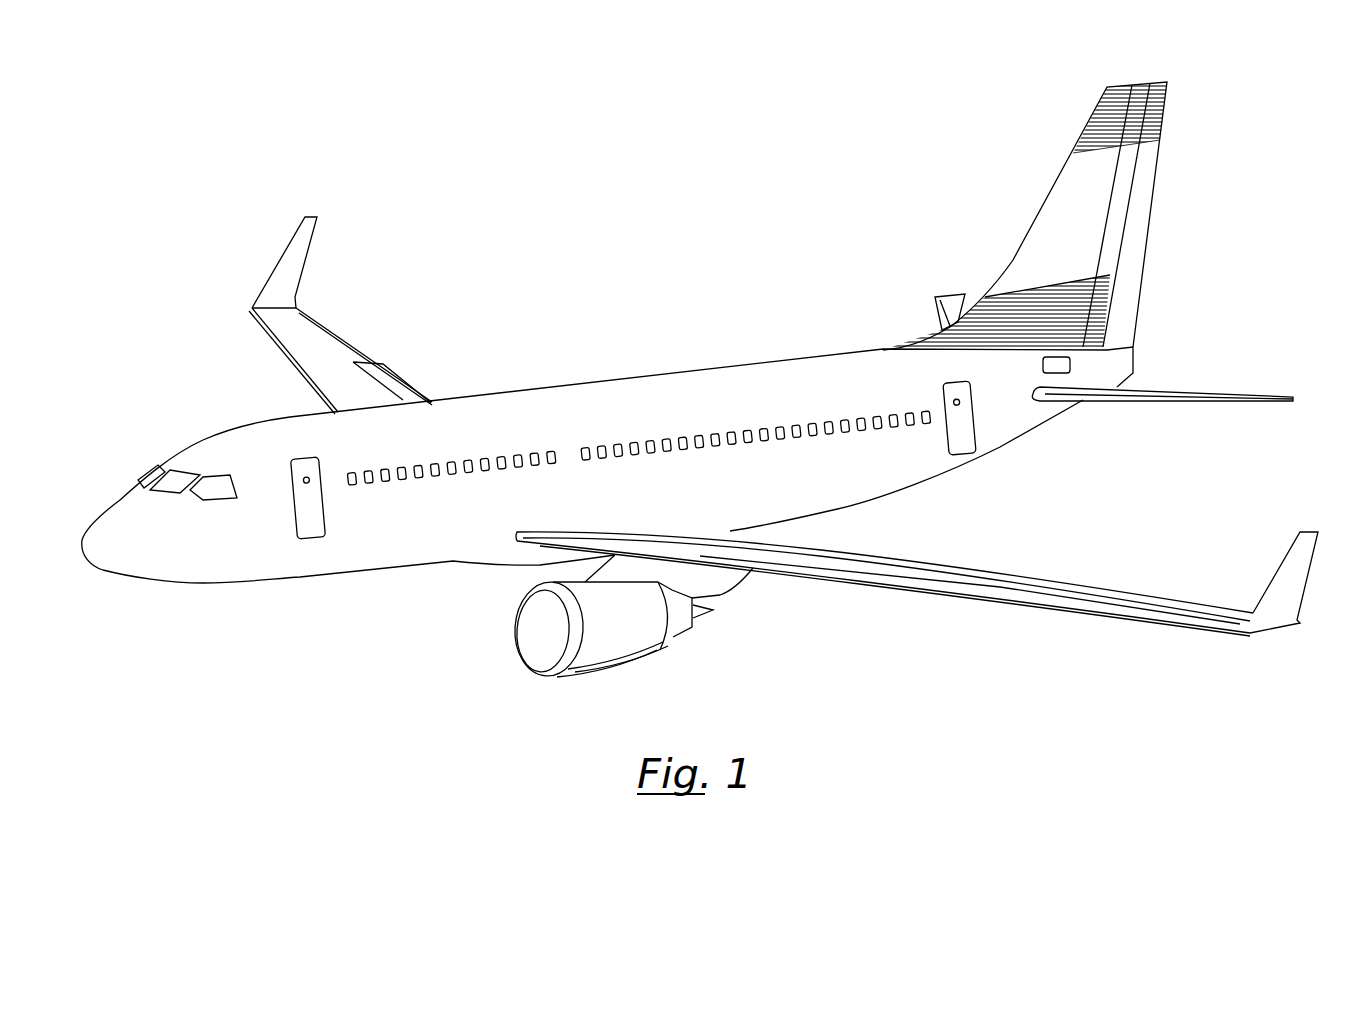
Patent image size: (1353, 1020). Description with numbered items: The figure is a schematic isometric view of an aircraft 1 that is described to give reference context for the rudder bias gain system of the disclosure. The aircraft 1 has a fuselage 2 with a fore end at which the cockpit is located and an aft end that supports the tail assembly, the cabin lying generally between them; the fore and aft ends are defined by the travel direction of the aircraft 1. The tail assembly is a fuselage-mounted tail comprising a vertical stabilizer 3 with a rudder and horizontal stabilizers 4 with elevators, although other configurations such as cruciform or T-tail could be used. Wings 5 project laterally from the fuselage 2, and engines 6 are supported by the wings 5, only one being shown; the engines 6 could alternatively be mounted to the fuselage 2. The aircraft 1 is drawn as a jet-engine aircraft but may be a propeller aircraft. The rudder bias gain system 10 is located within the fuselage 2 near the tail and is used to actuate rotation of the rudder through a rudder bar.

The aircraft 1 is at (582, 305).
The fuselage 2 is at (377, 540).
The vertical stabilizer 3 is at (1057, 212).
The horizontal stabilizers 4 is at (948, 307).
The wings 5 is at (325, 357).
The engines 6 is at (653, 638).
The rudder bias gain system 10 is at (1070, 365).